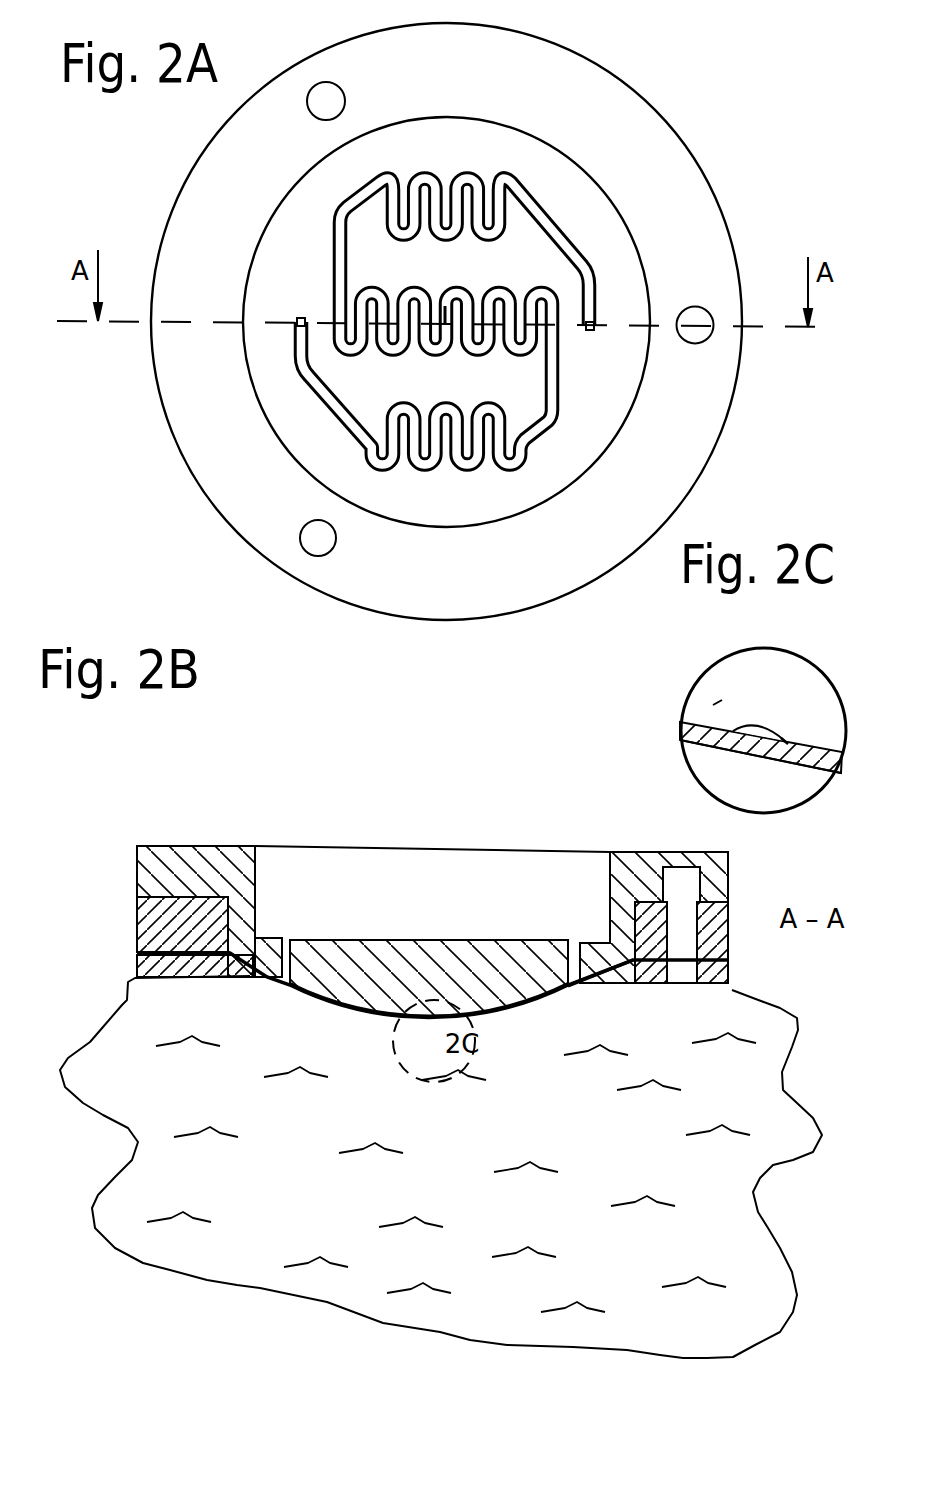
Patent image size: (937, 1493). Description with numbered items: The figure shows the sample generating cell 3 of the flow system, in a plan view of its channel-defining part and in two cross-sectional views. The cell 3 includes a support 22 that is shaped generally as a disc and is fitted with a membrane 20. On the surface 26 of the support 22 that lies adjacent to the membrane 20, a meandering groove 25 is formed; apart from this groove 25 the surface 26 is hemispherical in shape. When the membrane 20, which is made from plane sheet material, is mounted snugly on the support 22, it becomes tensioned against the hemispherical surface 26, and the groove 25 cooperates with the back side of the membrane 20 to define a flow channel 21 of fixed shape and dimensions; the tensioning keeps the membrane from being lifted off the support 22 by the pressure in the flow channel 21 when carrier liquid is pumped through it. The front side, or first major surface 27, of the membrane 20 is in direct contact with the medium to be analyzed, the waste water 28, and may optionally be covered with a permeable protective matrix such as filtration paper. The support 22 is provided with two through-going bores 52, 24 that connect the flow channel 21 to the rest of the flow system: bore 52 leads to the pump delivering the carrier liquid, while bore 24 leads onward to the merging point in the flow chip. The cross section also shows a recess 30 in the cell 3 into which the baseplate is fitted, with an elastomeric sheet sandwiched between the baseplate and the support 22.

In FIG. 2B, the sample generating cell 3 is at (130, 917).
In FIG. 2B, the membrane 20 is at (429, 978).
In FIG. 2C, the membrane 20 is at (802, 773).
In FIG. 2A, the flow channel 21 is at (440, 327).
In FIG. 2C, the flow channel 21 is at (760, 730).
In FIG. 2A, the support 22 is at (548, 562).
In FIG. 2B, the support 22 is at (140, 847).
In FIG. 2A, the bore 24 is at (592, 328).
In FIG. 2B, the bore 24 is at (640, 990).
In FIG. 2A, the meandering groove 25 is at (446, 316).
In FIG. 2C, the meandering groove 25 is at (785, 741).
In FIG. 2A, the surface 26 is at (599, 363).
In FIG. 2C, the surface 26 is at (725, 689).
In FIG. 2C, the first major surface 27 is at (732, 756).
In FIG. 2B, the waste water 28 is at (738, 1248).
In FIG. 2B, the recess 30 is at (362, 885).
In FIG. 2A, the bore 52 is at (298, 325).
In FIG. 2B, the bore 52 is at (257, 973).